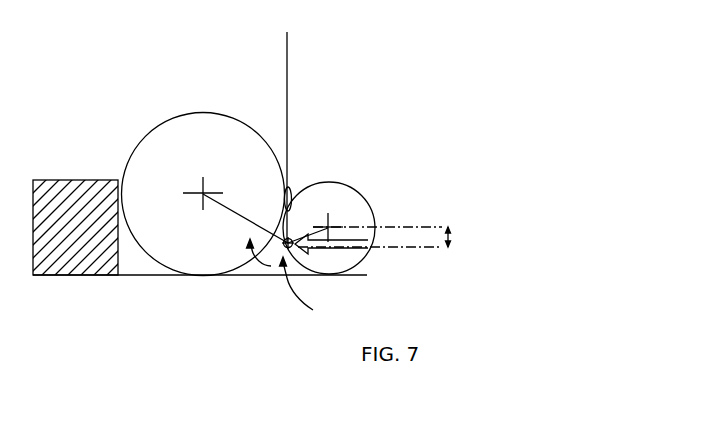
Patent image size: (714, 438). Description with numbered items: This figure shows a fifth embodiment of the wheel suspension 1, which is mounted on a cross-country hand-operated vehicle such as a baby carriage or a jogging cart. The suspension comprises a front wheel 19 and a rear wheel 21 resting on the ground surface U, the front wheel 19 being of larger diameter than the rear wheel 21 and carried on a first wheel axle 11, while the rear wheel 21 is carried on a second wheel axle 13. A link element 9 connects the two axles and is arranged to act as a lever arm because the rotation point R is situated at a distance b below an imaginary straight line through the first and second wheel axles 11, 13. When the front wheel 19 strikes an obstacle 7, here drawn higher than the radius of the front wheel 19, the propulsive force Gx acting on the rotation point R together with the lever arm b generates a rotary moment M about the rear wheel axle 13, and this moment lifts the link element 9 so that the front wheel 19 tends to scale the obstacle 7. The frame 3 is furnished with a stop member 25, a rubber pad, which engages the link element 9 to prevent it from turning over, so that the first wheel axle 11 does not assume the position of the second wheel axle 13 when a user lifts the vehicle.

The wheel suspension 1 is at (234, 91).
The frame 3 is at (287, 83).
The obstacle 7 is at (58, 180).
The link element 9 is at (238, 216).
The first wheel axle 11 is at (202, 194).
The second wheel axle 13 is at (291, 246).
The front wheel 19 is at (152, 130).
The rear wheel 21 is at (318, 182).
The stop member 25 is at (289, 190).
The propulsive force Gx is at (372, 232).
The rotary moment M is at (263, 261).
The rotation point R is at (308, 296).
The ground surface U is at (360, 275).
The lever arm b is at (452, 232).